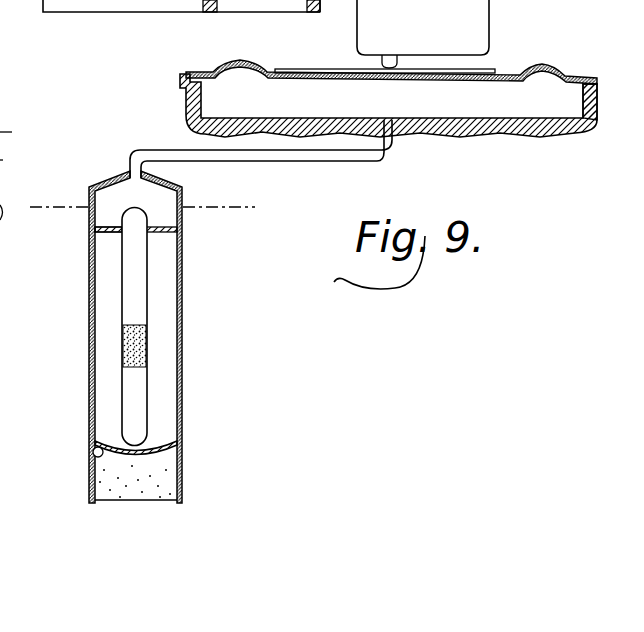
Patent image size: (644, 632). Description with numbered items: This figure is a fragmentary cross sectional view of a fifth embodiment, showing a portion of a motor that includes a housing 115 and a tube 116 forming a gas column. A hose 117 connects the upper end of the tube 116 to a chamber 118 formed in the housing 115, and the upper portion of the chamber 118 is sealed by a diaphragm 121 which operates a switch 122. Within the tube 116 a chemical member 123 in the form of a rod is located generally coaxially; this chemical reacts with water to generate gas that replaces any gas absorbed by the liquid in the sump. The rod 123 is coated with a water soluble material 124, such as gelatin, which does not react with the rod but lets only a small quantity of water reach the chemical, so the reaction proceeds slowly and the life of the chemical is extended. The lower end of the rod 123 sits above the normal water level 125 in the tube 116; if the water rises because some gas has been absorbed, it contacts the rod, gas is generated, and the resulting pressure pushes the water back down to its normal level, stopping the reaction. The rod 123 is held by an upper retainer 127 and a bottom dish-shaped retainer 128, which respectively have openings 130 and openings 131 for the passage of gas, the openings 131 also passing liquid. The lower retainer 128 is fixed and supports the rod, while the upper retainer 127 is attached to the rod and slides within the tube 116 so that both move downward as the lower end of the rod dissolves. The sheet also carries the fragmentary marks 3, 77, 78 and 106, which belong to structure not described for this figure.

The housing 3 is at (7, 229).
The plate 77 is at (23, 142).
The plate 78 is at (17, 167).
The support bar 106 is at (250, 0).
The housing 115 is at (408, 107).
The tube 116 is at (182, 342).
The hose 117 is at (262, 157).
The chamber 118 is at (527, 118).
The diaphragm 121 is at (540, 70).
The switch 122 is at (472, 23).
The chemical member 123 is at (148, 333).
The water soluble material 124 is at (146, 352).
The normal water level 125 is at (157, 478).
The upper retainer 127 is at (95, 224).
The bottom dish-shaped retainer 128 is at (117, 440).
The openings 130 is at (102, 231).
The openings 131 is at (90, 454).